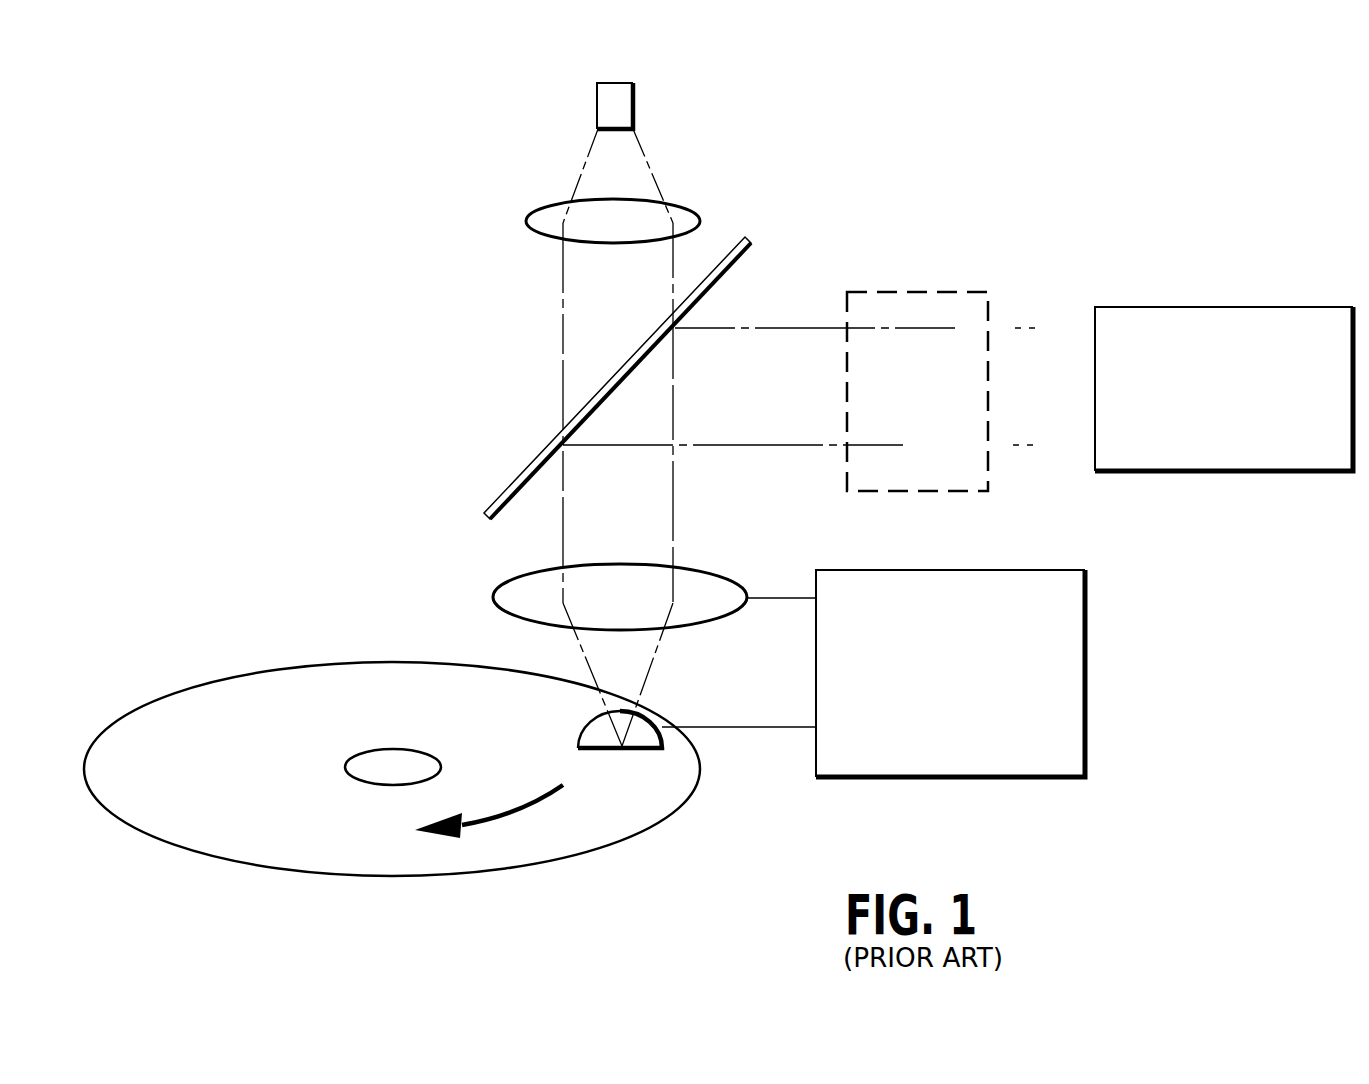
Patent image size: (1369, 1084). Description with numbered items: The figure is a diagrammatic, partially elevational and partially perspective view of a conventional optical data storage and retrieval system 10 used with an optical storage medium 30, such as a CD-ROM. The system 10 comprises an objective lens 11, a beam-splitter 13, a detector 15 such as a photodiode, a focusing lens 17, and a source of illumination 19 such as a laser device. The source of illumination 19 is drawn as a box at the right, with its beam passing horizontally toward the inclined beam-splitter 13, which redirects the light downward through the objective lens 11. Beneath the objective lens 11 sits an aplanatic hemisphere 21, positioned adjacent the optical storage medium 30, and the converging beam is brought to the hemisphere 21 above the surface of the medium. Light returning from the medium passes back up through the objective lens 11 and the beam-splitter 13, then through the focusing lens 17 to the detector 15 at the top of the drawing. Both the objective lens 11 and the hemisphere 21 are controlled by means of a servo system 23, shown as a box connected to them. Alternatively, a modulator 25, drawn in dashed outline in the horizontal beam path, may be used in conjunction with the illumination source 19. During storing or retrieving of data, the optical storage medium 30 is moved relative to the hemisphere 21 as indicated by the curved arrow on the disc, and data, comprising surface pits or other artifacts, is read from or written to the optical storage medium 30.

The optical data storage and retrieval system 10 is at (225, 380).
The objective lens 11 is at (500, 590).
The beam-splitter 13 is at (498, 505).
The detector 15 is at (597, 100).
The focusing lens 17 is at (530, 214).
The source of illumination 19 is at (1317, 307).
The aplanatic hemisphere 21 is at (648, 750).
The servo system 23 is at (1085, 603).
The modulator 25 is at (978, 292).
The optical storage medium 30 is at (240, 862).